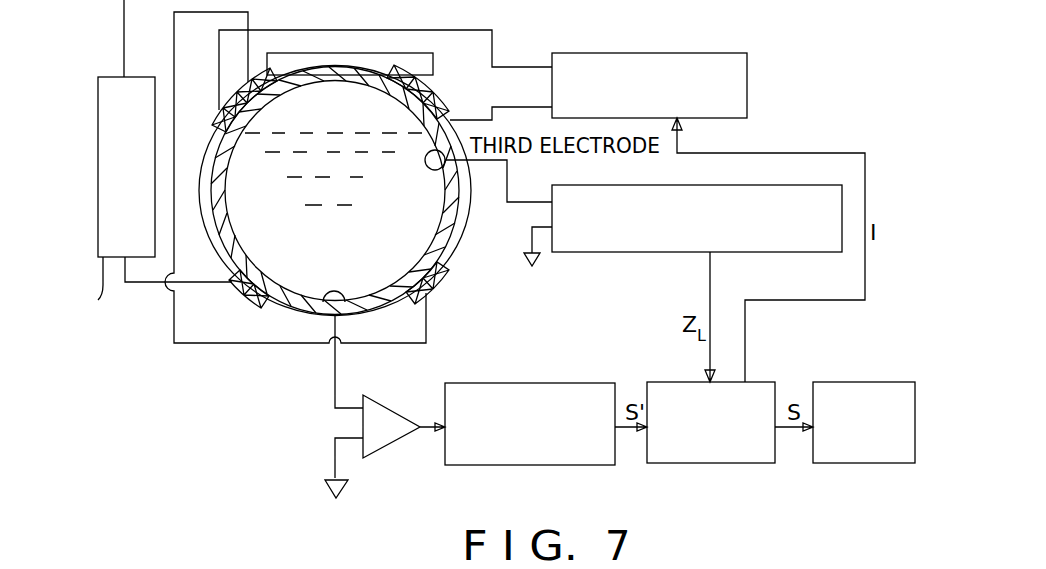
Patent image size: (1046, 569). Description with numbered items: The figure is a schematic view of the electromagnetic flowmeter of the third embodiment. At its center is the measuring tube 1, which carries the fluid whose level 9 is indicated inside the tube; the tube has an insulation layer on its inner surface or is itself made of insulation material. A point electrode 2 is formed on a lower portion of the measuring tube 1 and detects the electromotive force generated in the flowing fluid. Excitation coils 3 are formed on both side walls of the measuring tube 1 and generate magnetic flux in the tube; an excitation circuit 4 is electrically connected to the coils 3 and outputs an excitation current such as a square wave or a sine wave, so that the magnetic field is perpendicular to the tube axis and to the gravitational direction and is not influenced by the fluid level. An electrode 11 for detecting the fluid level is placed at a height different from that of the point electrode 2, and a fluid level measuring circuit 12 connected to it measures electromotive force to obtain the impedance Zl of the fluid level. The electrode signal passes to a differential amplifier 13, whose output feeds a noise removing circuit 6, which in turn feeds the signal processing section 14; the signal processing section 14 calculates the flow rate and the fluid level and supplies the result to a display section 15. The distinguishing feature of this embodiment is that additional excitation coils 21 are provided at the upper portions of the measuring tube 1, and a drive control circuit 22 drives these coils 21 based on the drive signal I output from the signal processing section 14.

The measuring tube 1 is at (358, 70).
The point electrode 2 is at (338, 292).
The excitation coils 3 is at (240, 96).
The excitation circuit 4 is at (143, 77).
The noise removing circuit 6 is at (530, 382).
The level of fluid 9 is at (335, 133).
The electrode for detecting a fluid level 11 is at (437, 170).
The fluid level measuring circuit 12 is at (552, 190).
The differential amplifier 13 is at (393, 413).
The signal processing section 14 is at (767, 382).
The display section 15 is at (874, 382).
The excitation coils 21 is at (400, 67).
The drive control circuit 22 is at (747, 91).